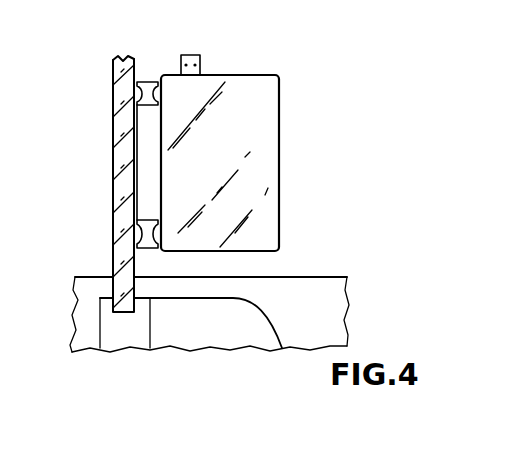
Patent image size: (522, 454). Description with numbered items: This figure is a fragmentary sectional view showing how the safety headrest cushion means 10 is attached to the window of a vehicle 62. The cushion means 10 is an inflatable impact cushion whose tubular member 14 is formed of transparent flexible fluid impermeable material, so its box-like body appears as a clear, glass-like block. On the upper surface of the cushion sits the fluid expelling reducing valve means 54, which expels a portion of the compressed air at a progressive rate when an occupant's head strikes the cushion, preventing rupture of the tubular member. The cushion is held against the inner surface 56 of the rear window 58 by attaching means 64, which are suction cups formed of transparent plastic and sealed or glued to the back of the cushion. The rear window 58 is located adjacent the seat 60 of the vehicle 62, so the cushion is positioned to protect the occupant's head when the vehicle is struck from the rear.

The cushion means 10 is at (295, 205).
The triangular tubular member 14 is at (267, 218).
The fluid expelling reducing valve means 54 is at (196, 54).
The inner surface 56 is at (137, 167).
The rear window 58 is at (113, 131).
The seat 60 is at (242, 338).
The vehicle 62 is at (345, 291).
The attaching means 64 is at (147, 82).